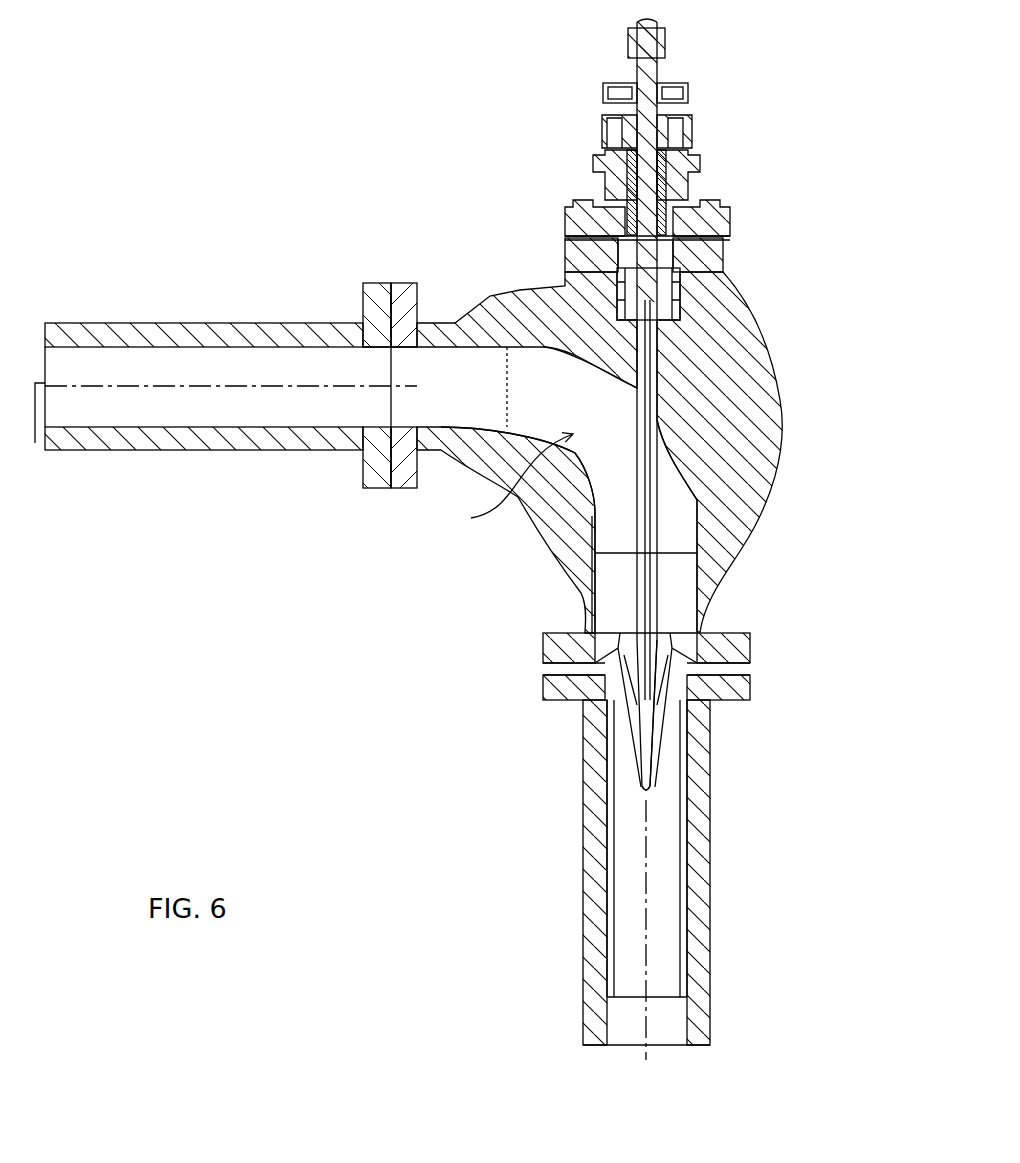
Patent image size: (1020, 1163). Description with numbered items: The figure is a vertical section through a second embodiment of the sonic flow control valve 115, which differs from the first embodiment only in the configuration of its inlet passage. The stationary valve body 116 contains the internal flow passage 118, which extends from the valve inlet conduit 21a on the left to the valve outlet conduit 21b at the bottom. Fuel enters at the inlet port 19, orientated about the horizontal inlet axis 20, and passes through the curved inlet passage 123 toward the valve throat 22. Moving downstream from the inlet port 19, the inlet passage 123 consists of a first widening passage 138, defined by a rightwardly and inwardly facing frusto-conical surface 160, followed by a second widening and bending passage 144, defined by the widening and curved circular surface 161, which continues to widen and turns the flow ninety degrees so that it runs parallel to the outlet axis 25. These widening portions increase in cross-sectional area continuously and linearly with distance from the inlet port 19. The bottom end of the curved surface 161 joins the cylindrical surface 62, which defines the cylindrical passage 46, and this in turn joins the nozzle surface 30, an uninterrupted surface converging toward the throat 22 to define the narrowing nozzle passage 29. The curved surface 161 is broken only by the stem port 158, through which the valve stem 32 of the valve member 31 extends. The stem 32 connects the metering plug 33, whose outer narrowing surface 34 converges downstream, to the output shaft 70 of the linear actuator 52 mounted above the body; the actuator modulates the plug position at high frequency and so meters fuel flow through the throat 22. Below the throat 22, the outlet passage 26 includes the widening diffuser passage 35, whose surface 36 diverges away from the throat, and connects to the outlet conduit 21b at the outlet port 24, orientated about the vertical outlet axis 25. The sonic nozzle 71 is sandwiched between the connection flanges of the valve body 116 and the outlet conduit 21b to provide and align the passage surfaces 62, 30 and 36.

The flow control valve 115 is at (321, 141).
The linear actuator 52 is at (720, 100).
The output shaft 70 is at (644, 250).
The valve body 116 is at (797, 327).
The internal flow passage 118 is at (674, 469).
The widening and curved circular cross-sectional surface 161 is at (590, 488).
The frusto-conical surface 160 is at (415, 350).
The first widening passage 138 is at (497, 411).
The second widening and bending passage 144 is at (568, 418).
The stem port 158 is at (636, 386).
The inlet axis 20 is at (217, 420).
The valve inlet conduit 21a is at (133, 452).
The inlet port 19 is at (386, 412).
The inlet passage 123 is at (502, 484).
The valve throat 22 is at (623, 684).
The valve stem 32 is at (650, 492).
The valve member 31 is at (674, 533).
The cylindrical passage 46 is at (690, 598).
The cylindrical surface 62 is at (597, 572).
The nozzle surface 30 is at (610, 646).
The nozzle passage 29 is at (686, 656).
The sonic nozzle 71 is at (546, 668).
The metering plug 33 is at (662, 710).
The outer narrowing surface 34 is at (660, 762).
The valve outlet conduit 21b is at (710, 842).
The diffuser surface 36 is at (615, 870).
The diffuser passage 35 is at (641, 944).
The outlet passage 26 is at (662, 901).
The outlet port 24 is at (676, 1002).
The outlet axis 25 is at (648, 1052).